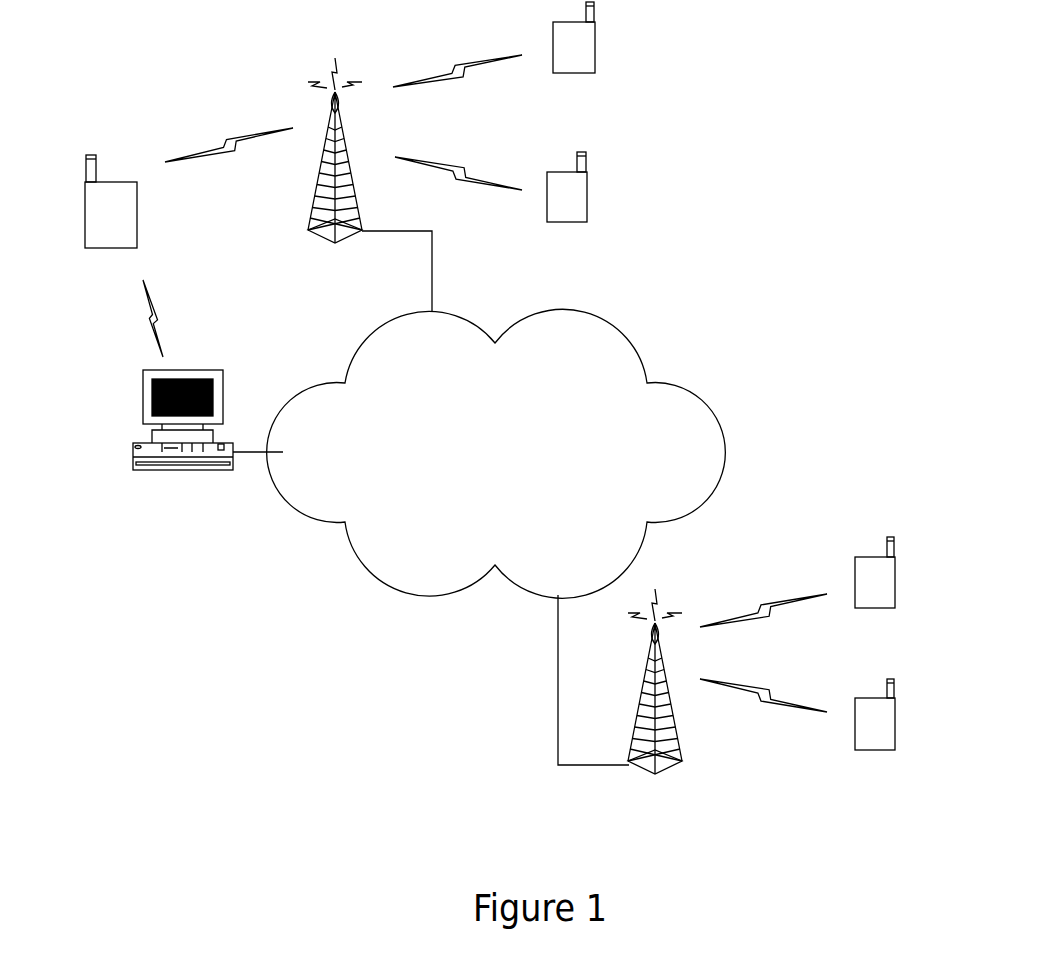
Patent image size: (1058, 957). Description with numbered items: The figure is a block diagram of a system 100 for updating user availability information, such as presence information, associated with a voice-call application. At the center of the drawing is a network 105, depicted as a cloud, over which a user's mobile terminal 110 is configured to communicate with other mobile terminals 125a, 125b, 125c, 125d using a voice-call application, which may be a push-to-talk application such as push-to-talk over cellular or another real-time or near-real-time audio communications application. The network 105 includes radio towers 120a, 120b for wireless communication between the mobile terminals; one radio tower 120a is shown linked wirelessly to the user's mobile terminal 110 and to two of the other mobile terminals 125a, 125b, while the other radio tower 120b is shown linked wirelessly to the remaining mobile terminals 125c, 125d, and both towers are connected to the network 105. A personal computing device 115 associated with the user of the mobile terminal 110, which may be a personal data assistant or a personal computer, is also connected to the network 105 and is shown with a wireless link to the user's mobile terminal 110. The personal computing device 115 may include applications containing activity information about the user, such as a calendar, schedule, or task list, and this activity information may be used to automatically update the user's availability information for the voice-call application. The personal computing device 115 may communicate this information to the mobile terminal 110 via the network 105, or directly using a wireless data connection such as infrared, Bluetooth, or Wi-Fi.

The system 100 is at (799, 140).
The network 105 is at (476, 476).
The user's mobile terminal 110 is at (113, 282).
The personal computing device 115 is at (172, 498).
The radio tower 120a is at (322, 274).
The radio tower 120b is at (642, 809).
The mobile terminal 125a is at (564, 102).
The mobile terminal 125b is at (557, 255).
The mobile terminal 125c is at (867, 649).
The mobile terminal 125d is at (861, 790).